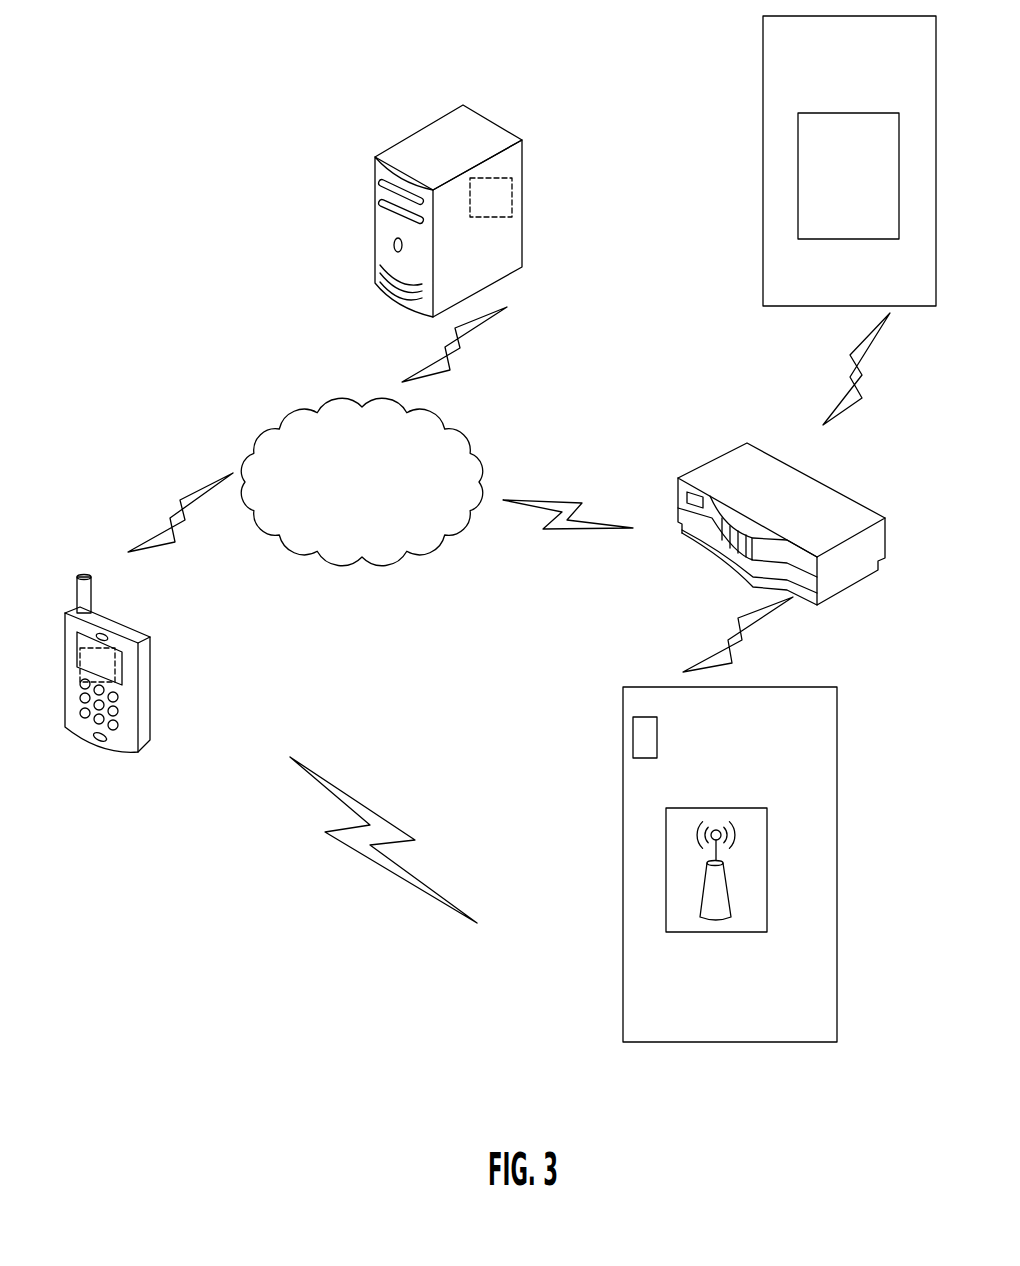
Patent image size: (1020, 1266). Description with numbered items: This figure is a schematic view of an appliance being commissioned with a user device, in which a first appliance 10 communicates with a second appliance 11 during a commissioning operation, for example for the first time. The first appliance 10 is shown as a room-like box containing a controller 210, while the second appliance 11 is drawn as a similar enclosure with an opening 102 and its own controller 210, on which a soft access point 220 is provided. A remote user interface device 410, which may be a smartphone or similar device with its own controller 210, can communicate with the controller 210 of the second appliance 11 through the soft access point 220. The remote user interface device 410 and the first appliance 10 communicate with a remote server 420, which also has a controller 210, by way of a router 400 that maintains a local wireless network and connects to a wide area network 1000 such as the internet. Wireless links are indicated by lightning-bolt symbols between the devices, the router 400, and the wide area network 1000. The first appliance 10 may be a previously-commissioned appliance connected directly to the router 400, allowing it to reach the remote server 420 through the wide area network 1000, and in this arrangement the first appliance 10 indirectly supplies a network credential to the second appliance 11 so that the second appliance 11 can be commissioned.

The first appliance 10 is at (763, 215).
The second appliance 11 is at (623, 940).
The door / entrance 102 is at (633, 735).
The controller 210 is at (487, 178).
The soft access point 220 is at (718, 898).
The router 400 is at (728, 463).
The remote user interface device 410 is at (145, 727).
The remote server 420 is at (508, 242).
The wide area network 1000 is at (362, 535).